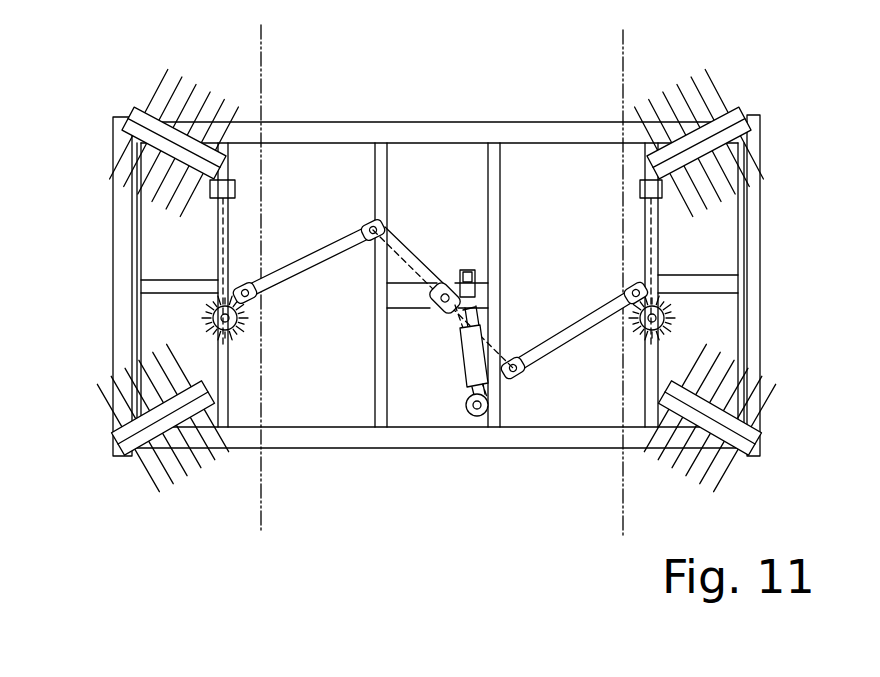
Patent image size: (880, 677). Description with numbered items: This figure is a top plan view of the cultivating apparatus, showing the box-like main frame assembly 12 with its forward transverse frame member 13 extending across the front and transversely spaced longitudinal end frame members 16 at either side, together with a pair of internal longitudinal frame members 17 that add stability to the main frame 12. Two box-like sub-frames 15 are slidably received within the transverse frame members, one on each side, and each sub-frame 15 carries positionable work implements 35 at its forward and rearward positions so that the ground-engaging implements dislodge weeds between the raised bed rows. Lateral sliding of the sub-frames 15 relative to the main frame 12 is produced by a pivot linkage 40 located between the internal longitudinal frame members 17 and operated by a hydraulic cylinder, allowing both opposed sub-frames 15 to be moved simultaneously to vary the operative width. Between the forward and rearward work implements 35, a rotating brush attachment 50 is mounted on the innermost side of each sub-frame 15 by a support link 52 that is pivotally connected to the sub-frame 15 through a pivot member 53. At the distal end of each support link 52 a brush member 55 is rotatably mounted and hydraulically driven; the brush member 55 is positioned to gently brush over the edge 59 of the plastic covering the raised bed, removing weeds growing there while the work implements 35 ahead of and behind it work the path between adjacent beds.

The main frame assembly 12 is at (421, 100).
The forward transverse frame member 13 is at (544, 128).
The sub-frame 15 is at (266, 460).
The longitudinal end frame member 16 is at (115, 283).
The internal longitudinal frame member 17 is at (375, 418).
The work implement 35 is at (149, 118).
The pivot linkage 40 is at (428, 236).
The rotating brush attachment 50 is at (692, 255).
The support link 52 is at (228, 240).
The pivot member 53 is at (235, 188).
The brush member 55 is at (240, 330).
The edge of the plastic 59 is at (262, 77).